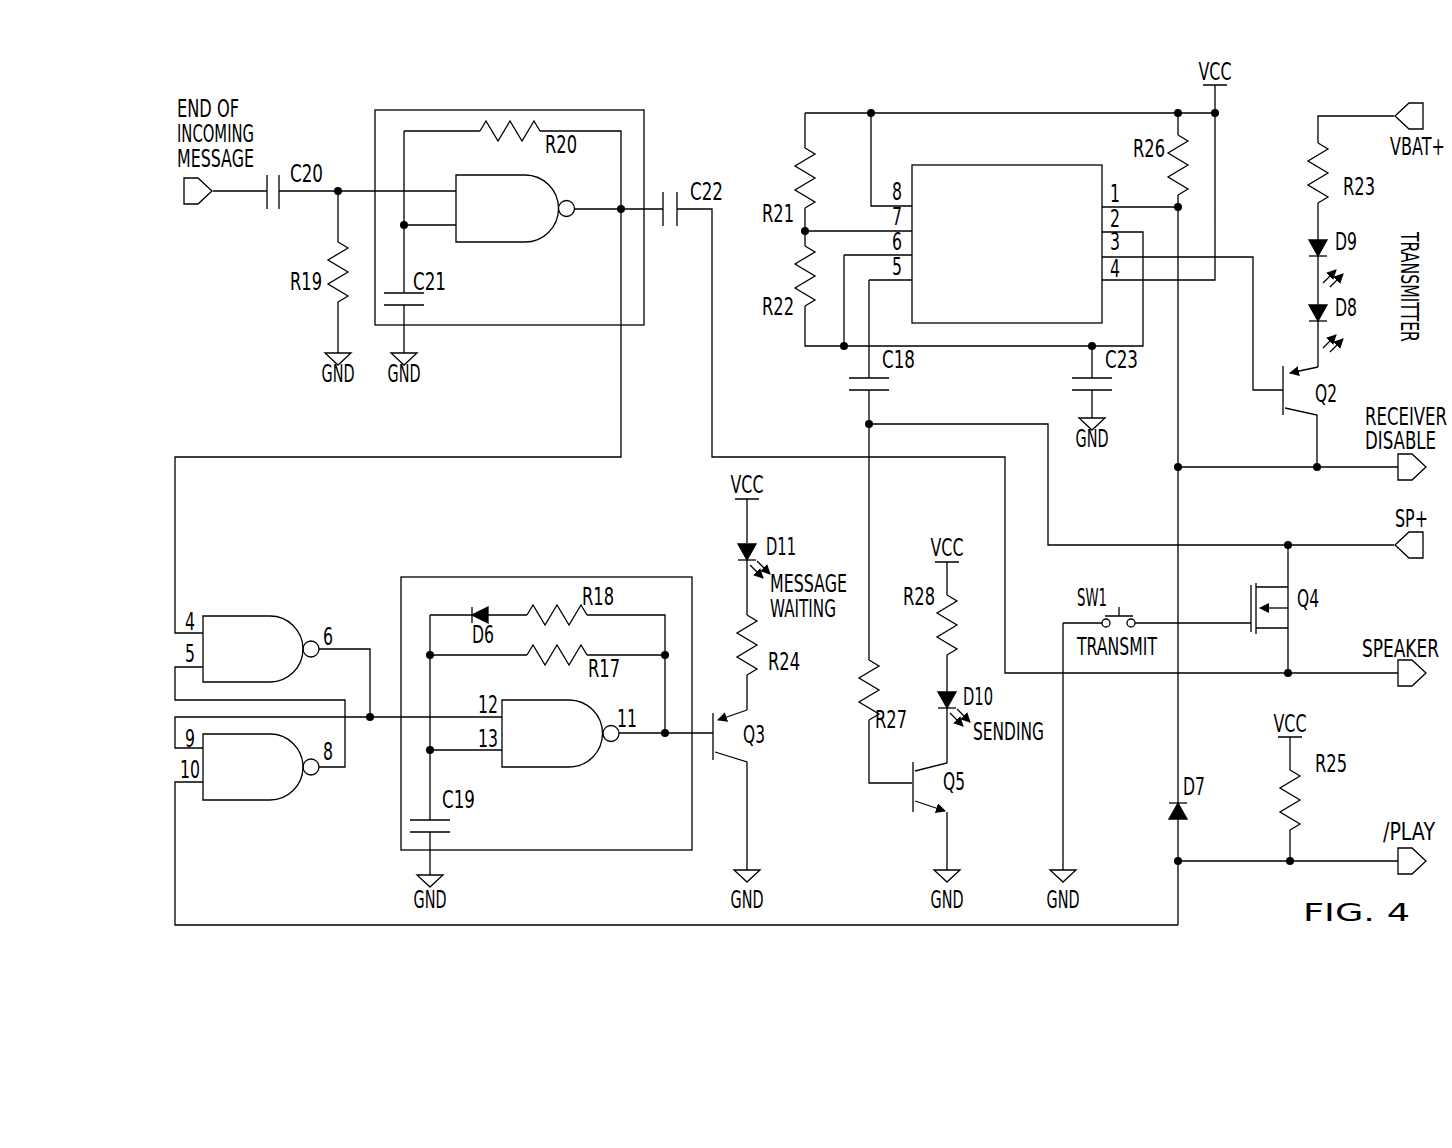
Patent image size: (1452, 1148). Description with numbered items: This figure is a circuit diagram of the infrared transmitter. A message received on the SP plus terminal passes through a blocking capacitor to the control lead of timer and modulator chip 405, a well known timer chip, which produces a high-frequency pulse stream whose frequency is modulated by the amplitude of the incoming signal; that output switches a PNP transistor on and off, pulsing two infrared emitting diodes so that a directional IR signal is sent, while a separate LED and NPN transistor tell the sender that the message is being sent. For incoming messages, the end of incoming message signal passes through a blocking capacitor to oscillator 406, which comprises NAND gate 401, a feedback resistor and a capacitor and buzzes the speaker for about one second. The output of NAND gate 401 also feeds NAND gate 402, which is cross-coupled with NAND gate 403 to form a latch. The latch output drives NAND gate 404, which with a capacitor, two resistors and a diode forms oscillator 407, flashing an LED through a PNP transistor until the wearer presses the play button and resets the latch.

The NAND gate 401 is at (528, 243).
The NAND gate 402 is at (275, 616).
The NAND gate 403 is at (272, 799).
The NAND gate 404 is at (572, 768).
The timer and modulator chip 405 is at (1015, 165).
The oscillator 406 is at (557, 110).
The oscillator 407 is at (600, 577).